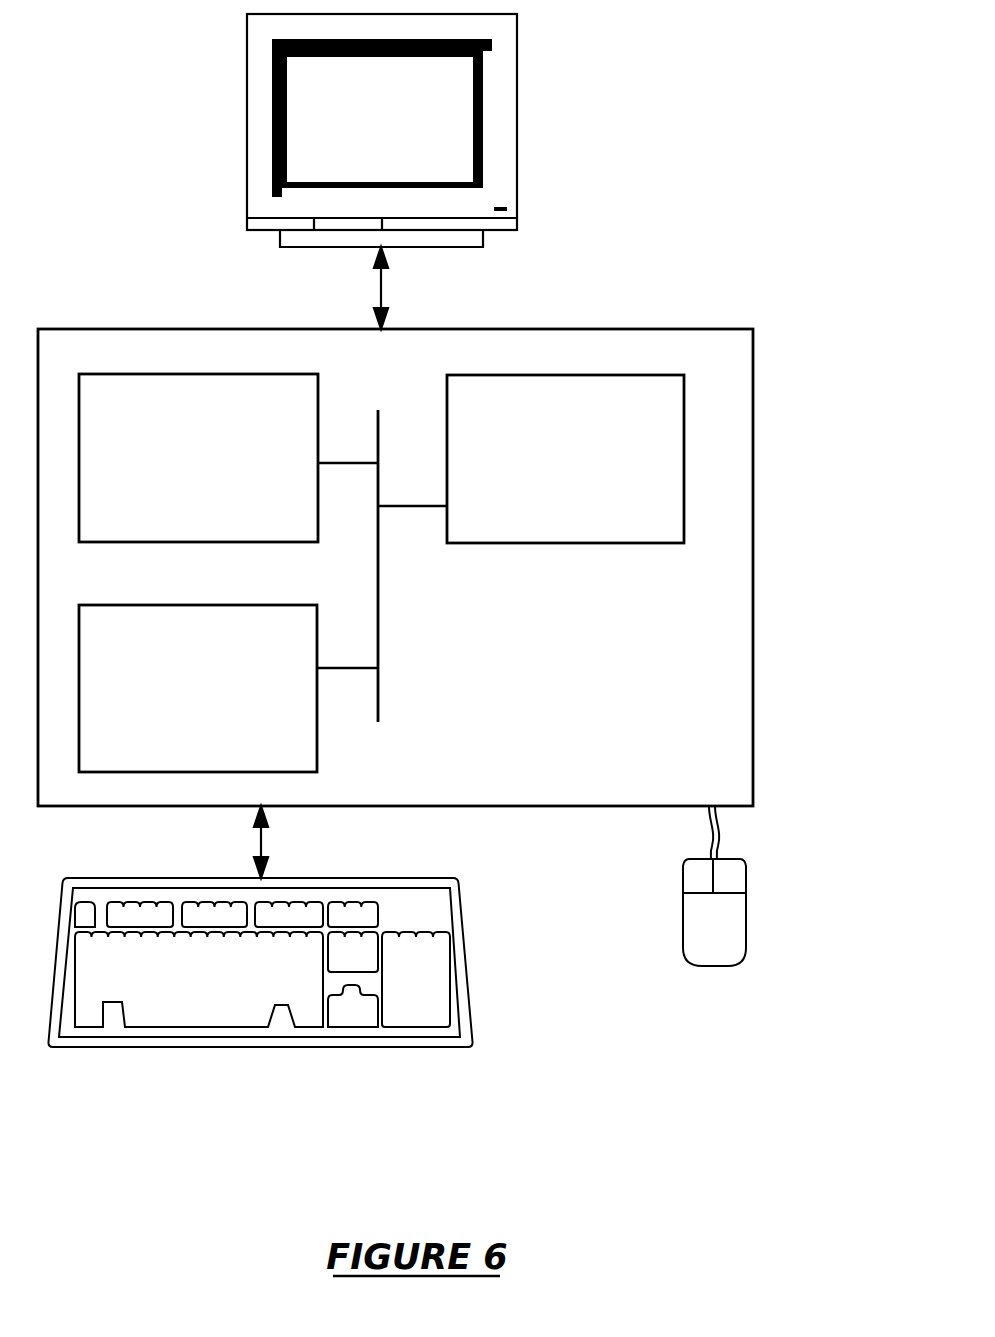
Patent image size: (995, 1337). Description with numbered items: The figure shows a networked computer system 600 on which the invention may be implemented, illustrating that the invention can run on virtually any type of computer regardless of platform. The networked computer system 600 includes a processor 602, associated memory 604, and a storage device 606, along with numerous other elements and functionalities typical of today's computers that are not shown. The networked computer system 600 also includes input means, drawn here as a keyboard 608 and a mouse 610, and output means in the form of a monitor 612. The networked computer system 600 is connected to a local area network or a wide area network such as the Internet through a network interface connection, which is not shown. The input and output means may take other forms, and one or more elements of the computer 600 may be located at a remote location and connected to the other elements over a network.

The networked computer system 600 is at (772, 179).
The processor 602 is at (561, 473).
The memory 604 is at (176, 472).
The storage device 606 is at (173, 704).
The keyboard 608 is at (210, 1005).
The mouse 610 is at (736, 938).
The monitor 612 is at (359, 136).